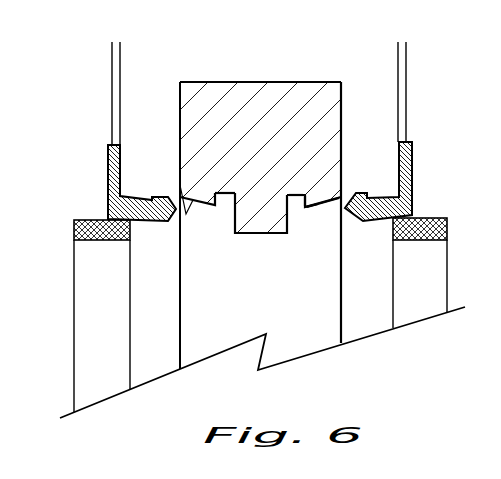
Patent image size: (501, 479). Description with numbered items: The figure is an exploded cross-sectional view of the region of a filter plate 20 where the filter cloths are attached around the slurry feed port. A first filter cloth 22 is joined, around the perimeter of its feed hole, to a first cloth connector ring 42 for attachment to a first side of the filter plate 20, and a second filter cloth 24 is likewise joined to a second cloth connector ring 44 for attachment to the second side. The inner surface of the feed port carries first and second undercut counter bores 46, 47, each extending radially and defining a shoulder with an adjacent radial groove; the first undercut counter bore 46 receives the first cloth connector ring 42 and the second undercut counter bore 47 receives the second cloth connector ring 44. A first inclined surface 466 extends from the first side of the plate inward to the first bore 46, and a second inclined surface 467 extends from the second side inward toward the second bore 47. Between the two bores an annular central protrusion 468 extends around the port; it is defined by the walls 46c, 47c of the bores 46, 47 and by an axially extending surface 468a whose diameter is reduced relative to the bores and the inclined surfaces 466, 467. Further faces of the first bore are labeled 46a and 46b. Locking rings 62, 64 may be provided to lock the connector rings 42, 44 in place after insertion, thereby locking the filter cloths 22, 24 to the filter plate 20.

The filter plate 20 is at (267, 97).
The first filter cloth 22 is at (407, 70).
The second filter cloth 24 is at (112, 70).
The first cloth connector ring 42 is at (412, 152).
The second cloth connector ring 44 is at (108, 157).
The first undercut counter bore 46 is at (314, 208).
The inclined face of right projection 46a is at (308, 192).
The side face of right projection 46b is at (308, 190).
The wall of first bore 46c is at (300, 193).
The first inclined surface 466 is at (307, 207).
The second inclined surface 467 is at (180, 185).
The annular central protrusion 468 is at (270, 236).
The axially extending surface 468a is at (253, 236).
The second undercut counter bore 47 is at (227, 210).
The wall of second bore 47c is at (224, 193).
The locking ring 62 is at (447, 224).
The locking ring 64 is at (108, 240).